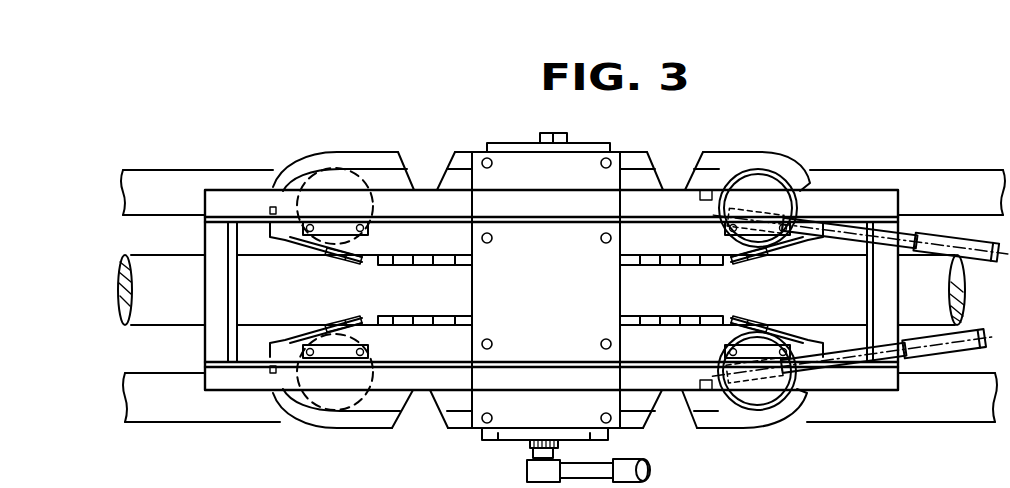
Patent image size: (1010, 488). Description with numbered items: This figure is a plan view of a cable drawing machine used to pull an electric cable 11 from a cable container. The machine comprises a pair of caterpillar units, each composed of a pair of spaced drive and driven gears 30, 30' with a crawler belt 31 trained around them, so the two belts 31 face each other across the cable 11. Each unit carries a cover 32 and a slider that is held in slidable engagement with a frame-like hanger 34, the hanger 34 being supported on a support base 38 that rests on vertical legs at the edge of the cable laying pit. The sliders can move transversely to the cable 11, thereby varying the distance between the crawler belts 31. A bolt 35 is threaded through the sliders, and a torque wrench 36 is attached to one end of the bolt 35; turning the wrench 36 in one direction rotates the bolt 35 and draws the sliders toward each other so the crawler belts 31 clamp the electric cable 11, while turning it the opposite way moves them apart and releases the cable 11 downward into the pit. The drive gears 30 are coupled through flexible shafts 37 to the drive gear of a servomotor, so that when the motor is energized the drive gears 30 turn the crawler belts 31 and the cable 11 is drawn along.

The electric cable 11 is at (163, 318).
The drive gear 30 is at (761, 264).
The driven gear 30' is at (321, 262).
The crawler belt 31 is at (380, 322).
The cover 32 is at (378, 160).
The frame-like hanger 34 is at (620, 306).
The bolt 35 is at (562, 134).
The torque wrench 36 is at (656, 470).
The flexible shaft 37 is at (938, 318).
The support base 38 is at (638, 200).